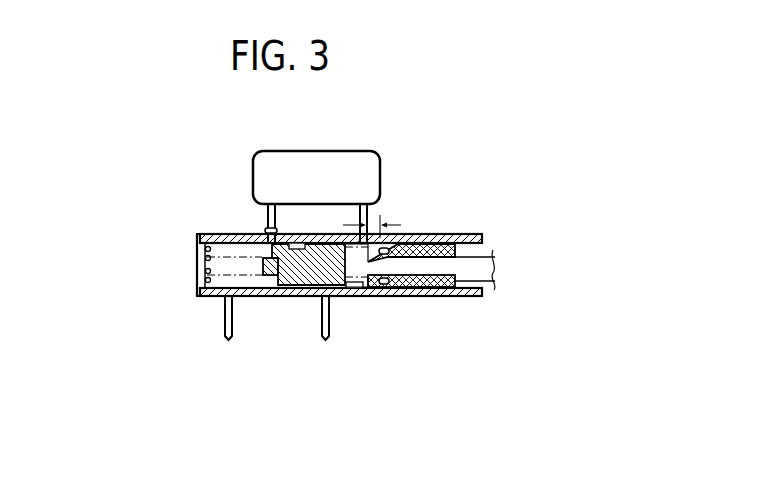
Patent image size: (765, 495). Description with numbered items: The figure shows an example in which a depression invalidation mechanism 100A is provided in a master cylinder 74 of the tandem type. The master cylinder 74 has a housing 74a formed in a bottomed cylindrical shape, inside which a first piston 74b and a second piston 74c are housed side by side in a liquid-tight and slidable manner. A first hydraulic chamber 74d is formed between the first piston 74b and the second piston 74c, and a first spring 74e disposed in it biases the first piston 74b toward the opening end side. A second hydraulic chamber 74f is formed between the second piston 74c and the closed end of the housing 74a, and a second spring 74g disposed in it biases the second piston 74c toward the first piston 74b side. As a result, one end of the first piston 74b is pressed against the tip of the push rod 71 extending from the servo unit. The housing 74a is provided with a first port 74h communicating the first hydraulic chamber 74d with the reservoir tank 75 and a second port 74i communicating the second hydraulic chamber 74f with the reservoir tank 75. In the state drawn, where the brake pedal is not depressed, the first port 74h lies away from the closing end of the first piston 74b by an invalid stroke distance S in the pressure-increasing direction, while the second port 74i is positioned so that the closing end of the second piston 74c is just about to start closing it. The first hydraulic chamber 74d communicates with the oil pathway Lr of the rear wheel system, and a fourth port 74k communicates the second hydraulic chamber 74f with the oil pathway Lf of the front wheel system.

The depression invalidation mechanism 100A is at (408, 218).
The reservoir tank 75 is at (317, 150).
The master cylinder 74 is at (440, 228).
The housing 74a is at (200, 236).
The first piston 74b is at (420, 290).
The second piston 74c is at (293, 298).
The first hydraulic chamber 74d is at (372, 293).
The first spring 74e is at (357, 300).
The second hydraulic chamber 74f is at (207, 264).
The second spring 74g is at (248, 298).
The first port 74h is at (353, 231).
The second port 74i is at (270, 229).
The fourth port 74k is at (210, 297).
The push rod 71 is at (476, 284).
The invalid stroke distance S is at (370, 220).
The oil pathway for front wheels Lf is at (222, 318).
The oil pathway for rear wheels Lr is at (325, 320).